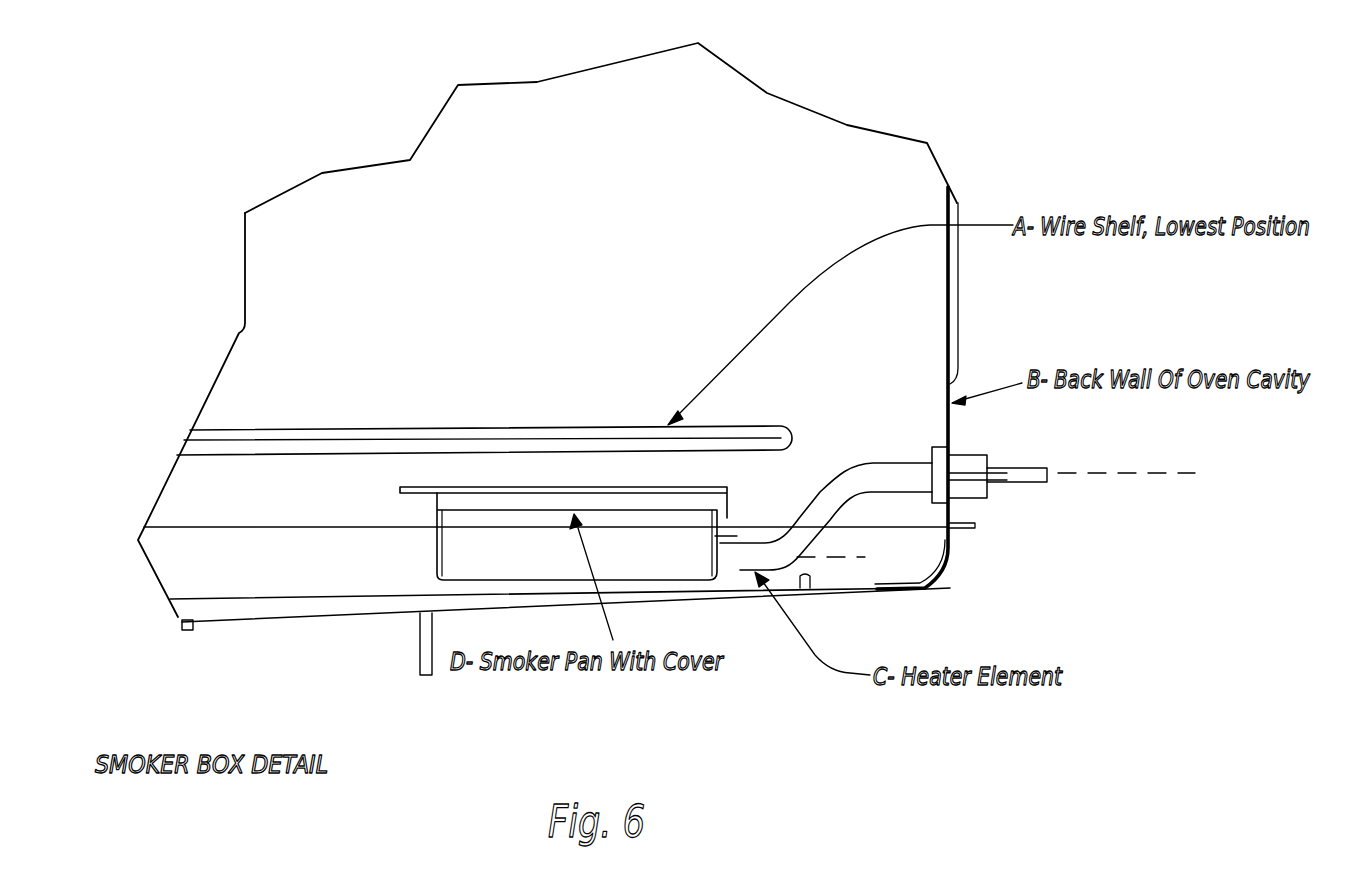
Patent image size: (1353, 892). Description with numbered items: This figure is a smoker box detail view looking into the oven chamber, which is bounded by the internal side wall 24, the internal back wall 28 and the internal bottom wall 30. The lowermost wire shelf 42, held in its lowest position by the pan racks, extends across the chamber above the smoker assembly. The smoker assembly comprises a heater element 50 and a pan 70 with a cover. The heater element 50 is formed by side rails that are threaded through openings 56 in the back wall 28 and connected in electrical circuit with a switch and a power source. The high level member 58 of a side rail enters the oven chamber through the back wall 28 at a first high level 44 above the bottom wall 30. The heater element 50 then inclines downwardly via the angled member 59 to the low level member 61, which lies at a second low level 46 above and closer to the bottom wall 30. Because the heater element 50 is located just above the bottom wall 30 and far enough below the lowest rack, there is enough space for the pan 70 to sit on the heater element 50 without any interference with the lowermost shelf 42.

The internal side wall 24 is at (570, 277).
The internal back wall 28 is at (950, 383).
The internal bottom wall 30 is at (882, 593).
The wire shelf 42 is at (337, 428).
The first high level 44 is at (1120, 475).
The second low level 46 is at (843, 558).
The heater element 50 is at (832, 433).
The openings 56 is at (951, 446).
The high level member 58 is at (878, 463).
The angled member 59 is at (800, 507).
The low level member 61 is at (737, 562).
The pan 70 is at (417, 562).